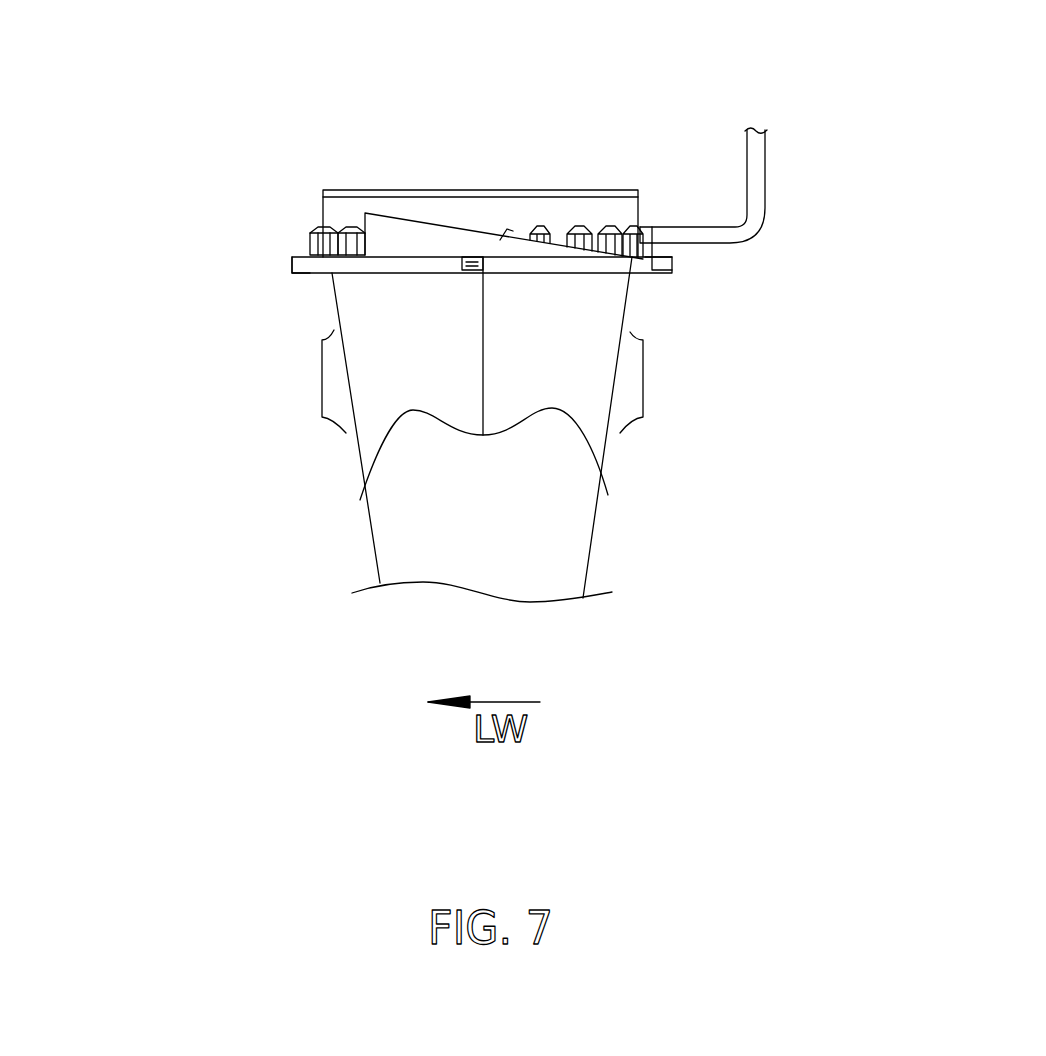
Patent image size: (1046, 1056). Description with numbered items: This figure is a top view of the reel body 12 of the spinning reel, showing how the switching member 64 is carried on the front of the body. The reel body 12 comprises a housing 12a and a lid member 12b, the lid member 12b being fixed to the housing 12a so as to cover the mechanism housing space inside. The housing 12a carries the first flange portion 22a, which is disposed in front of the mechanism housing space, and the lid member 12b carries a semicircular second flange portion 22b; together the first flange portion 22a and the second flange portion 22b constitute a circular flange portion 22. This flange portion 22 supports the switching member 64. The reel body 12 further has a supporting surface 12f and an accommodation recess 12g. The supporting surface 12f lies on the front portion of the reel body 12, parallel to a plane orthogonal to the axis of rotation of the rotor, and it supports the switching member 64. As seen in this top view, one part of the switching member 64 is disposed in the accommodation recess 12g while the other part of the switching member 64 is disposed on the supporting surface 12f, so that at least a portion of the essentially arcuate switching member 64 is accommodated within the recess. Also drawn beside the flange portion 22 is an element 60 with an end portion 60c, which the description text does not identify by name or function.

The reel body 12 is at (347, 552).
The housing 12a is at (590, 377).
The lid member 12b is at (372, 402).
The supporting surface 12f is at (301, 256).
The accommodation recess 12g is at (638, 253).
The flange portion 22 is at (410, 292).
The first flange portion 22a is at (672, 266).
The second flange portion 22b is at (306, 267).
The tube 60 is at (777, 157).
The tube end portion 60c is at (695, 235).
The switching member 64 is at (427, 238).